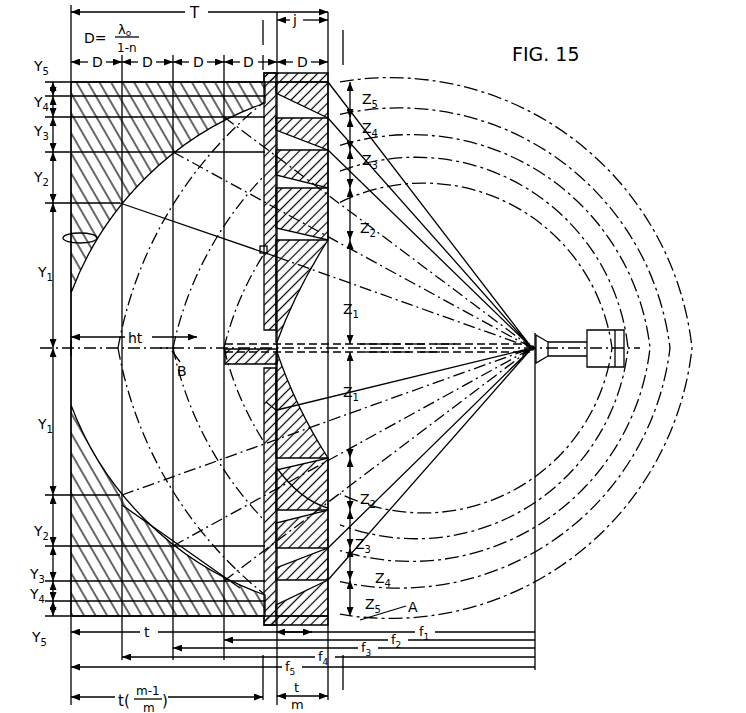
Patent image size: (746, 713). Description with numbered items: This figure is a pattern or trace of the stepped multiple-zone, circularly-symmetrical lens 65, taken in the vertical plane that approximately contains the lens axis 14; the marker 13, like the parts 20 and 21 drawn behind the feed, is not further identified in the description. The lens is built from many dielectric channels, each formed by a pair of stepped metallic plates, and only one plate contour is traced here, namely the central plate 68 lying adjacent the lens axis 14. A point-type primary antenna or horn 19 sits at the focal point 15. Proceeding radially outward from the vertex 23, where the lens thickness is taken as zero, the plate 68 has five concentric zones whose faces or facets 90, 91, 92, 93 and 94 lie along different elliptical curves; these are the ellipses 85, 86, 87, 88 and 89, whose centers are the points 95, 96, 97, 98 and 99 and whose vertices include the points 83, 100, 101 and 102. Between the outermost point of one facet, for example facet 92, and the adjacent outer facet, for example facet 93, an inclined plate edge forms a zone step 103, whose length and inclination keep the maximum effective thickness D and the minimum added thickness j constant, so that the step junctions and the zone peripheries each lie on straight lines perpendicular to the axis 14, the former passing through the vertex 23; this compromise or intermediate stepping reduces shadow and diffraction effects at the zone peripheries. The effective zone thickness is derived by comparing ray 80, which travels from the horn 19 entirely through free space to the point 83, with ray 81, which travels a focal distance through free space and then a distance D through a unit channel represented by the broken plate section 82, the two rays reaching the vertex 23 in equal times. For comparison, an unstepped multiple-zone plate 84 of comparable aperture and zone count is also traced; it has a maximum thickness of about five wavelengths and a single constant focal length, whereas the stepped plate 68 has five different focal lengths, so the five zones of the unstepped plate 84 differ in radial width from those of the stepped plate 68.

The section line 13- 13 is at (263, 40).
The lens axis 14 is at (375, 40).
The focal point 15 is at (532, 352).
The primary antenna 19 is at (544, 336).
The waveguide 20 is at (569, 357).
The transmitter-receiver unit 21 is at (594, 332).
The vertex 23 is at (279, 351).
The stepped multiple-zone lens 65 is at (270, 406).
The central plate 68 is at (279, 393).
The ray 80 is at (373, 344).
The ray 81 is at (377, 353).
The broken plate section 82 is at (248, 365).
The point 83 is at (226, 346).
The unstepped multiple-zone plate 84 is at (100, 236).
The ellipse 85 is at (604, 412).
The ellipse 86 is at (615, 432).
The ellipse 87 is at (628, 441).
The ellipse 88 is at (632, 475).
The ellipse 89 is at (638, 498).
The facet 90 is at (283, 294).
The facet 91 is at (322, 478).
The facet 92 is at (297, 528).
The facet 93 is at (298, 564).
The facet 94 is at (298, 600).
The ellipse center 95 is at (385, 346).
The ellipse center 96 is at (399, 353).
The ellipse center 97 is at (415, 344).
The ellipse center 98 is at (432, 353).
The ellipse center 99 is at (447, 350).
The ellipse vertex 100 is at (166, 350).
The ellipse vertex 101 is at (74, 351).
The ellipse vertex 102 is at (76, 345).
The zone step 103 is at (240, 590).